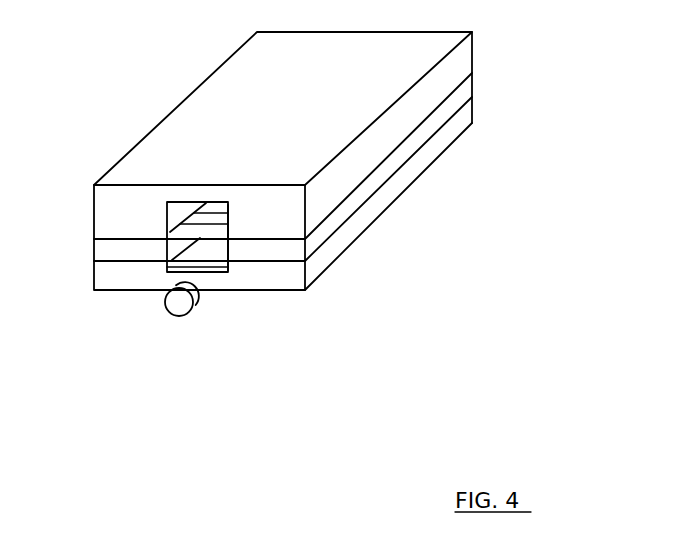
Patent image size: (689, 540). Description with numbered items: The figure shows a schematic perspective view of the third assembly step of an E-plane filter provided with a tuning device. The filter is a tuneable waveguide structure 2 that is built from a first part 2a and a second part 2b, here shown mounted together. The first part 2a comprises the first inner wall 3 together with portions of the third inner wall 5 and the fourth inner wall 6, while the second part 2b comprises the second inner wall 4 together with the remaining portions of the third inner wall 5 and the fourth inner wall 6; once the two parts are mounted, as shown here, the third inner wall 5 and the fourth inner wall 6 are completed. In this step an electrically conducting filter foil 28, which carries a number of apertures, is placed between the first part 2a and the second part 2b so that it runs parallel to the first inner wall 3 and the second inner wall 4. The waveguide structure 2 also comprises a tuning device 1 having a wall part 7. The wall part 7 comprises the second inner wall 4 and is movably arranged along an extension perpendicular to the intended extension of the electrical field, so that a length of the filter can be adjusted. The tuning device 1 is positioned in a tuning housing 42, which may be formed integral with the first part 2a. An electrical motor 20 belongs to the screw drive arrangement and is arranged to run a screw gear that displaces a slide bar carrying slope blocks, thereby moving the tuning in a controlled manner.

The tuning device 1 is at (227, 283).
The tuneable waveguide structure 2 is at (525, 48).
The first part 2a is at (362, 195).
The second part 2b is at (365, 163).
The first inner wall 3 is at (193, 197).
The second inner wall 4 is at (209, 249).
The third inner wall 5 is at (167, 252).
The fourth inner wall 6 is at (235, 219).
The wall part 7 is at (167, 262).
The electrical motor 20 is at (177, 303).
The electrically conducting filter foil 28 is at (210, 201).
The tuning housing 42 is at (447, 138).